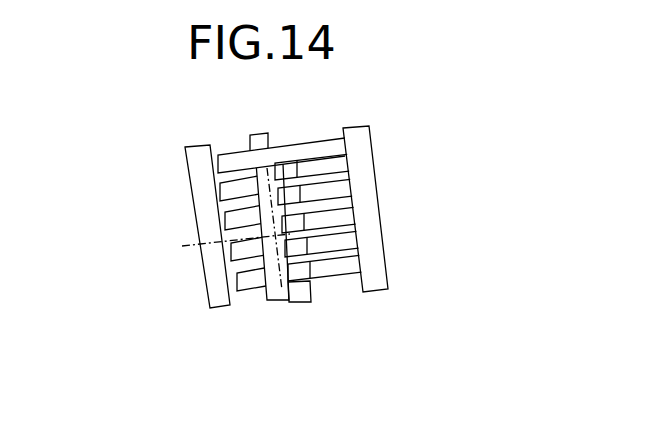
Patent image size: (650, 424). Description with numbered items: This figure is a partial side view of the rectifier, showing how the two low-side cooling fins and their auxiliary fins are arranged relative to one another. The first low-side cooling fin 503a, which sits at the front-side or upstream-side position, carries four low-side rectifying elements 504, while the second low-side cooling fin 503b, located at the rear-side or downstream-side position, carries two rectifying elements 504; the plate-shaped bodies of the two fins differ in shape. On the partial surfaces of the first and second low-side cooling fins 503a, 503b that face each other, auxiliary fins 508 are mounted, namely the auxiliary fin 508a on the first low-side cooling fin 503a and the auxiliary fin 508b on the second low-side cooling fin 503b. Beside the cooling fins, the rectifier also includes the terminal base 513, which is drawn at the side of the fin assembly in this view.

The first low-side cooling fin 503a is at (370, 239).
The second low-side cooling fin 503b is at (258, 147).
The low-side rectifying element 504 is at (214, 248).
The auxiliary fin 508 is at (390, 197).
The auxiliary fin 508a is at (343, 166).
The auxiliary fin 508b is at (325, 140).
The terminal base 513 is at (198, 218).